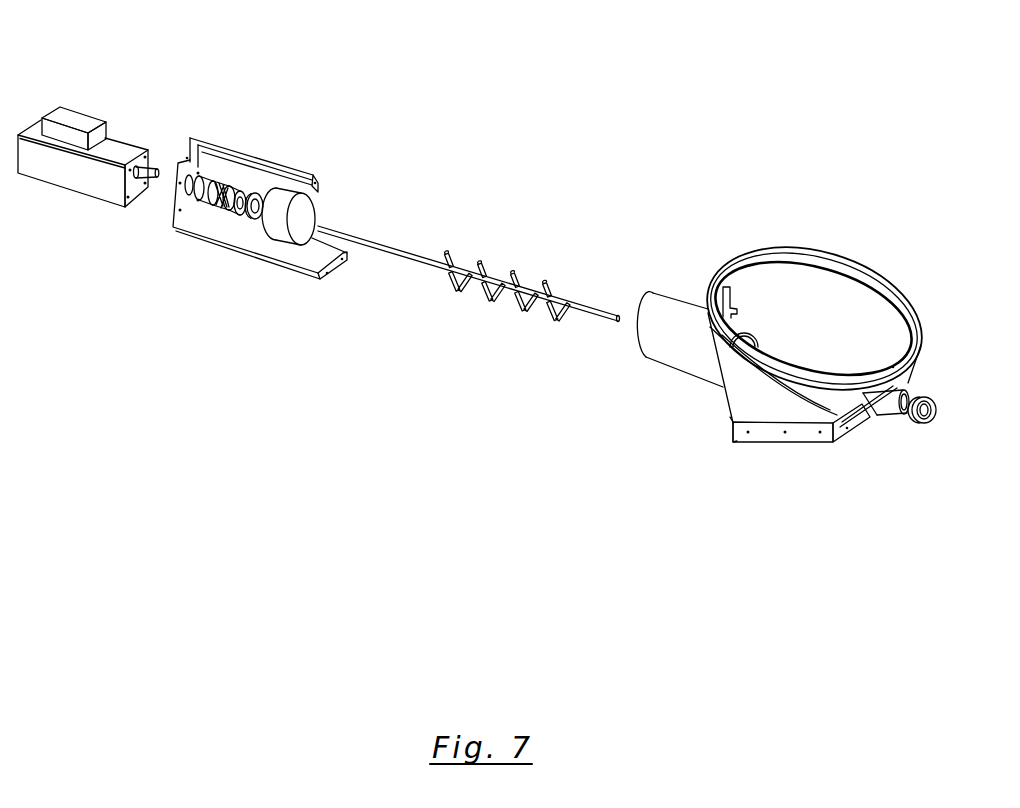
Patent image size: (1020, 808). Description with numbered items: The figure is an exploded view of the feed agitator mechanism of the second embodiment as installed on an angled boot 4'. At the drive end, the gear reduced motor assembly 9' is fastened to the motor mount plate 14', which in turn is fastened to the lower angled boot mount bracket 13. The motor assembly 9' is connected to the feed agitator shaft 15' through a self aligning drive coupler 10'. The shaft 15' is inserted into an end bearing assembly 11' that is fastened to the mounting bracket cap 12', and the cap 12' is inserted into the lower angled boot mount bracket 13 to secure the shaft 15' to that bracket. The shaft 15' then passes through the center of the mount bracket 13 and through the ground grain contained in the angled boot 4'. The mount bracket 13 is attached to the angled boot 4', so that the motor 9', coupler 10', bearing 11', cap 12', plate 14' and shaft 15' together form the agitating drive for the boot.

The gear reduced motor assembly 9' is at (117, 123).
The self aligning drive coupler 10' is at (238, 139).
The end bearing assembly 11' is at (590, 298).
The mounting bracket cap 12' is at (360, 164).
The lower angled boot mount bracket 13 is at (650, 360).
The motor mount plate 14' is at (234, 231).
The feed agitator shaft 15' is at (469, 243).
The angled boot 4' is at (807, 360).